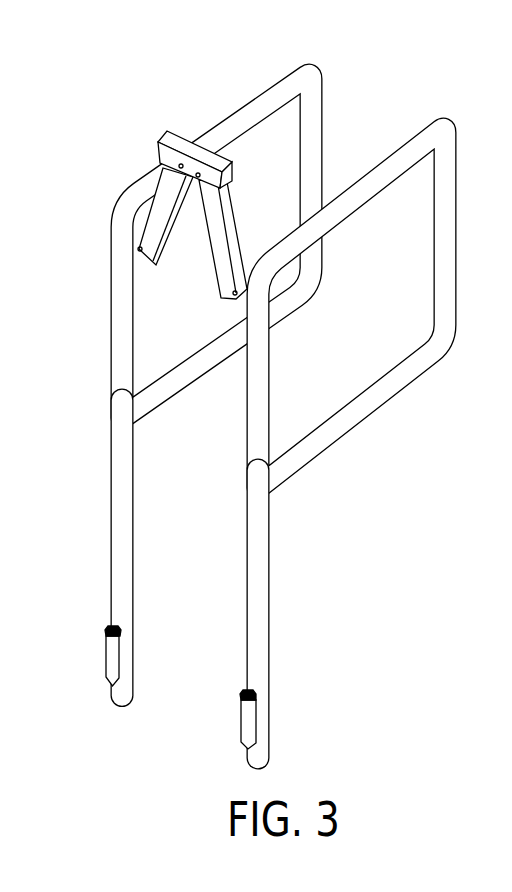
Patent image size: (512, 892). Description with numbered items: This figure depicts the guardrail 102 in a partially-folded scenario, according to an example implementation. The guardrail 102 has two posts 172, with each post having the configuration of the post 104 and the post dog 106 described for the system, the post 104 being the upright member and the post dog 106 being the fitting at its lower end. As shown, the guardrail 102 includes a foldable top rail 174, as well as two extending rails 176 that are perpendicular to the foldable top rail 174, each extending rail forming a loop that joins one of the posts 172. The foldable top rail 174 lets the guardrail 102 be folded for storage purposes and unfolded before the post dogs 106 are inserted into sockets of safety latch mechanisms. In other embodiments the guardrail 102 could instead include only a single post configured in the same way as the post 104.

The guardrail 102 is at (245, 395).
The post 104 is at (224, 579).
The post dog 106 is at (247, 730).
The posts 172 is at (130, 495).
The foldable top rail 174 is at (187, 147).
The extending rails 176 is at (397, 168).